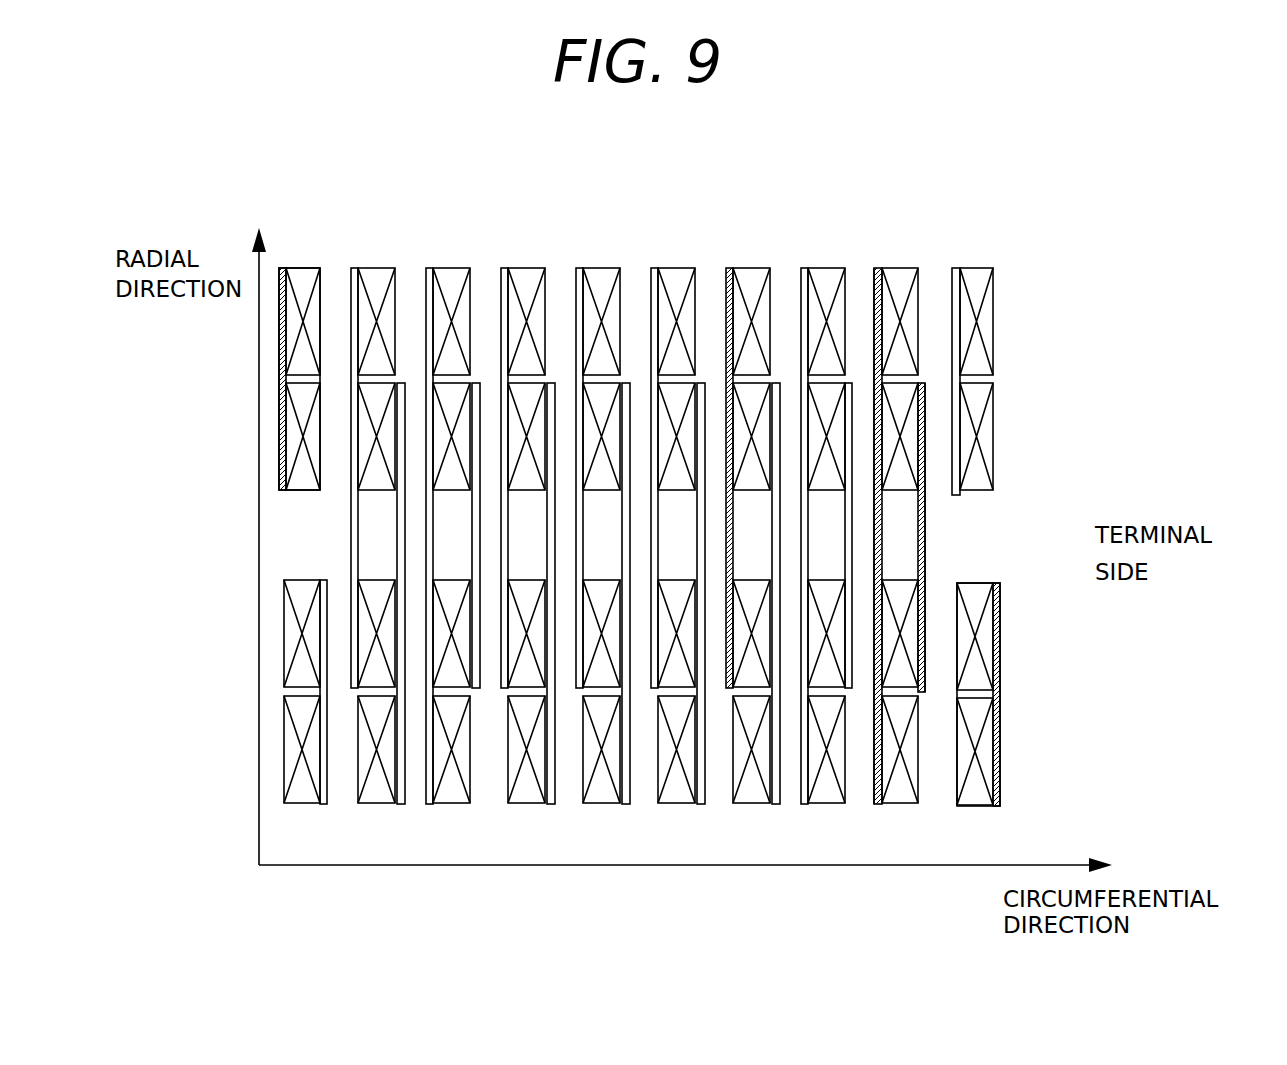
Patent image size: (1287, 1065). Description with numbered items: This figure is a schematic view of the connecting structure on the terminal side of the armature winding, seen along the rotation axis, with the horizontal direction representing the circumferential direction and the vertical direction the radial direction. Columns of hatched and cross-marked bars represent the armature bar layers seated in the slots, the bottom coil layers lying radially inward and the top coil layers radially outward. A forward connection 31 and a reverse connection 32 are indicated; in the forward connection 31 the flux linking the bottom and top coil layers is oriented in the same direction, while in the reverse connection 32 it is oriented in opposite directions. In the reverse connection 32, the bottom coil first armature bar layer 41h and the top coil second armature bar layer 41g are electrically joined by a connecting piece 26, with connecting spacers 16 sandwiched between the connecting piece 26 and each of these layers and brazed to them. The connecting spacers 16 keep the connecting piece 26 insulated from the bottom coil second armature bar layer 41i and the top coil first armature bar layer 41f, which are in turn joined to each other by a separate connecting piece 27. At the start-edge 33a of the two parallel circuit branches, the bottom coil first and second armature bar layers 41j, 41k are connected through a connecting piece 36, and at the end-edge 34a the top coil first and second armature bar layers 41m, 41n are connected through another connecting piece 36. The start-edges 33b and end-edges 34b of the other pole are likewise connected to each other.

The connecting spacer 16 is at (882, 270).
The connecting piece 26 is at (873, 288).
The connecting piece 27 is at (927, 556).
The forward connection 31 is at (743, 260).
The reverse connection 32 is at (947, 517).
The start-edge 33a is at (296, 262).
The start-edge of the other pole 33b is at (300, 812).
The end-edge 34a is at (975, 817).
The end-edge of the other pole 34b is at (1000, 307).
The connecting piece 36 is at (280, 347).
The top coil first armature bar layer 41f is at (897, 680).
The top coil second armature bar layer 41g is at (895, 808).
The bottom coil first armature bar layer 41h is at (905, 283).
The bottom coil second armature bar layer 41i is at (900, 408).
The bottom coil first armature bar layer 41j is at (303, 283).
The bottom coil second armature bar layer 41k is at (316, 428).
The top coil first armature bar layer 41m is at (975, 675).
The top coil second armature bar layer 41n is at (975, 720).